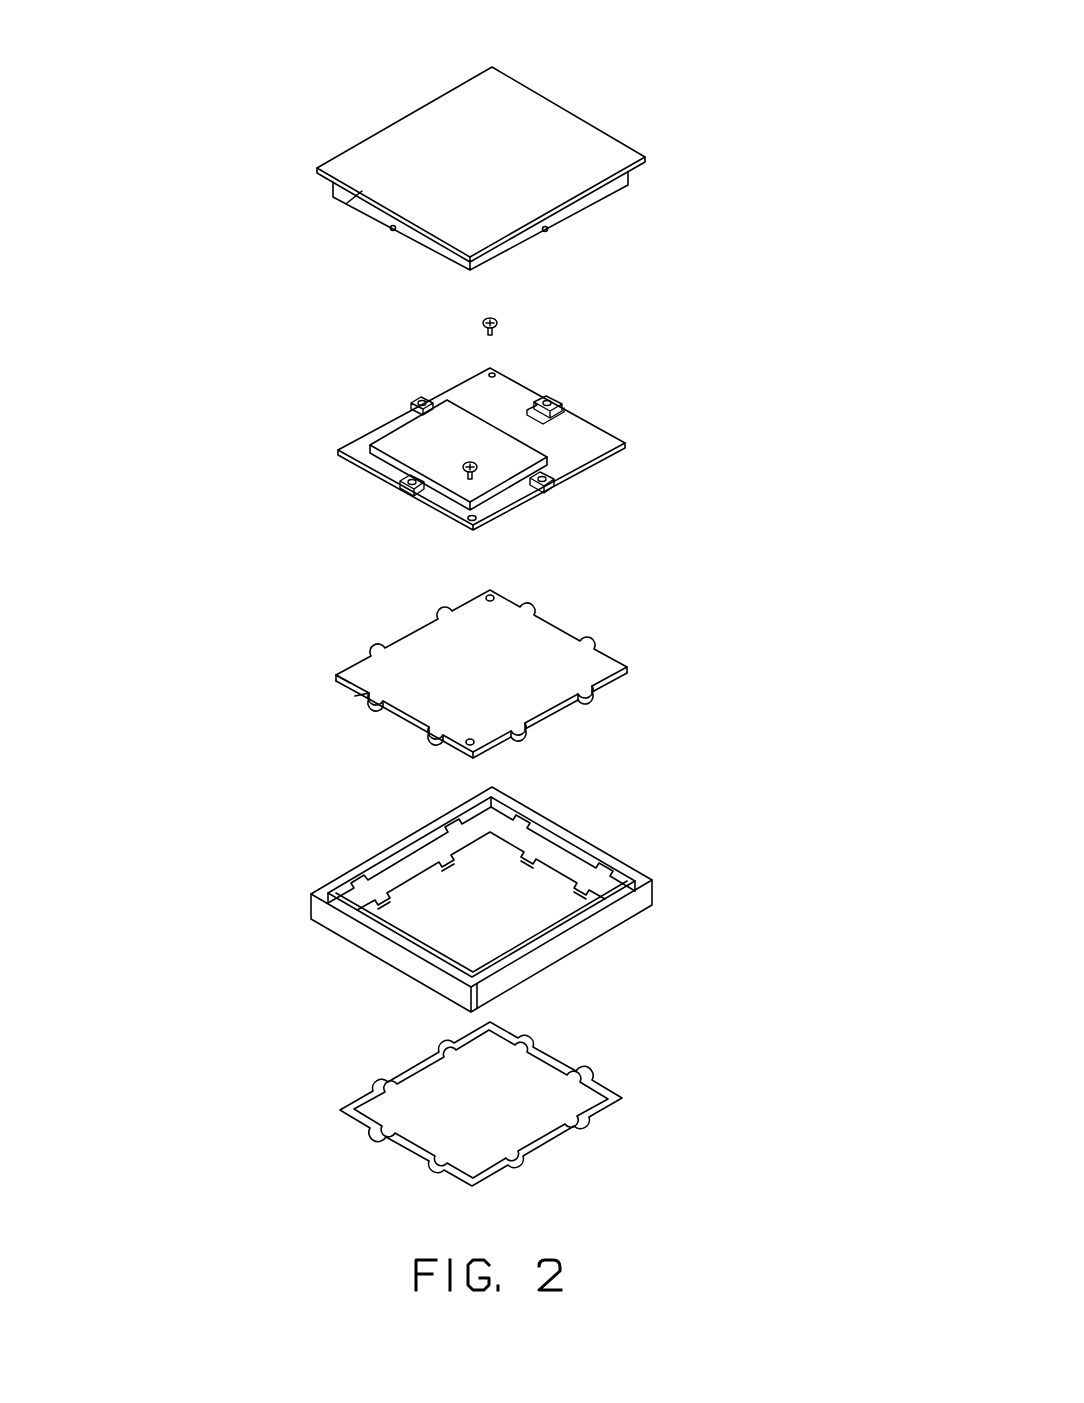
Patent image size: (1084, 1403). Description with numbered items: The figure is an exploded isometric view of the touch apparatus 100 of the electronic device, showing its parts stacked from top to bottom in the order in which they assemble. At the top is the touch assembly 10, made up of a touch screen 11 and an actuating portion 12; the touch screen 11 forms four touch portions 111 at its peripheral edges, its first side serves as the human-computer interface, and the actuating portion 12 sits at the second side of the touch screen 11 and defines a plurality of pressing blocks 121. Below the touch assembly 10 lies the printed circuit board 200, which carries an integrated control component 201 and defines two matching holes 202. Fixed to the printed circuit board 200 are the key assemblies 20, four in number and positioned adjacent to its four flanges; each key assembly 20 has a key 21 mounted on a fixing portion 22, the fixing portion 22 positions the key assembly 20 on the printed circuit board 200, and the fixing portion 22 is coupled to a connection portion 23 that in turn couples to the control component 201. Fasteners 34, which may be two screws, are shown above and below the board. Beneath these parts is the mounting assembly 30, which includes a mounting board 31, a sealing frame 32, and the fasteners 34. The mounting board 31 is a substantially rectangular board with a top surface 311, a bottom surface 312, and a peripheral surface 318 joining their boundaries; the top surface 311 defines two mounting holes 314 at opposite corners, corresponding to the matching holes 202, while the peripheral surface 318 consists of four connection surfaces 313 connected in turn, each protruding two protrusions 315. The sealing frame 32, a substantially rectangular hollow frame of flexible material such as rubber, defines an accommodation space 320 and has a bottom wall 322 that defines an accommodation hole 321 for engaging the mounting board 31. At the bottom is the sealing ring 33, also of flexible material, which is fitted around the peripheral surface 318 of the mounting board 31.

The touch apparatus 100 is at (498, 27).
The touch assembly 10 is at (363, 122).
The touch screen 11 is at (645, 158).
The touch portion 111 is at (608, 140).
The actuating portion 12 is at (607, 187).
The pressing block 121 is at (393, 231).
The key assembly 20 is at (420, 403).
The printed circuit board 200 is at (355, 458).
The control component 201 is at (400, 445).
The matching hole 202 is at (491, 372).
The key 21 is at (547, 398).
The fixing portion 22 is at (560, 405).
The connection portion 23 is at (566, 418).
The mounting assembly 30 is at (703, 708).
The mounting board 31 is at (597, 710).
The top surface 311 is at (540, 637).
The bottom surface 312 is at (360, 702).
The connection surface 313 is at (350, 693).
The mounting hole 314 is at (496, 596).
The protrusion 315 is at (423, 742).
The peripheral surface 318 is at (470, 760).
The sealing frame 32 is at (595, 834).
The accommodation space 320 is at (406, 853).
The accommodation hole 321 is at (418, 903).
The bottom wall 322 is at (352, 905).
The sealing ring 33 is at (565, 1062).
The fastener 34 is at (497, 316).